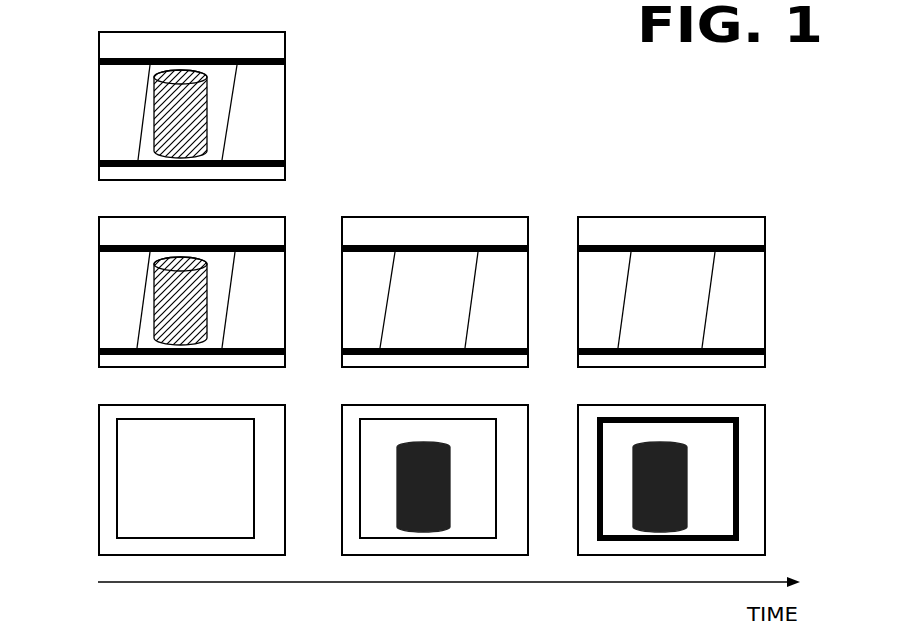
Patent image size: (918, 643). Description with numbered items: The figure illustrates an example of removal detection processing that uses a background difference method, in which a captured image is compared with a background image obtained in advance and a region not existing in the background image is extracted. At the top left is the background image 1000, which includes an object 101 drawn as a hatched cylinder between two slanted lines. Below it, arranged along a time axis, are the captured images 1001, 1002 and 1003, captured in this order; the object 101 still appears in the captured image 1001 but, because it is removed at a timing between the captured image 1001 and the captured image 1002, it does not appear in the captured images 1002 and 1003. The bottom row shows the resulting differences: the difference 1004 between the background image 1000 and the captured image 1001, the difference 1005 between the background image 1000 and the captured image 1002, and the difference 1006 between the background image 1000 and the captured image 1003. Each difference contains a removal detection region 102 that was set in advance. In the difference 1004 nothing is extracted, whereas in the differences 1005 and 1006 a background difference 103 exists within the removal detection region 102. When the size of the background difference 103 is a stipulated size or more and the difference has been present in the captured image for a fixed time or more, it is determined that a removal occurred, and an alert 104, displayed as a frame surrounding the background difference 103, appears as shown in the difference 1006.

The background image 1000 is at (205, 32).
The captured image 1001 is at (206, 217).
The captured image 1002 is at (443, 217).
The captured image 1003 is at (682, 217).
The difference 1004 is at (205, 405).
The difference 1005 is at (442, 405).
The difference 1006 is at (682, 405).
The object 101 is at (155, 132).
The removal detection region 102 is at (117, 487).
The background difference 103 is at (397, 495).
The alert 104 is at (739, 436).